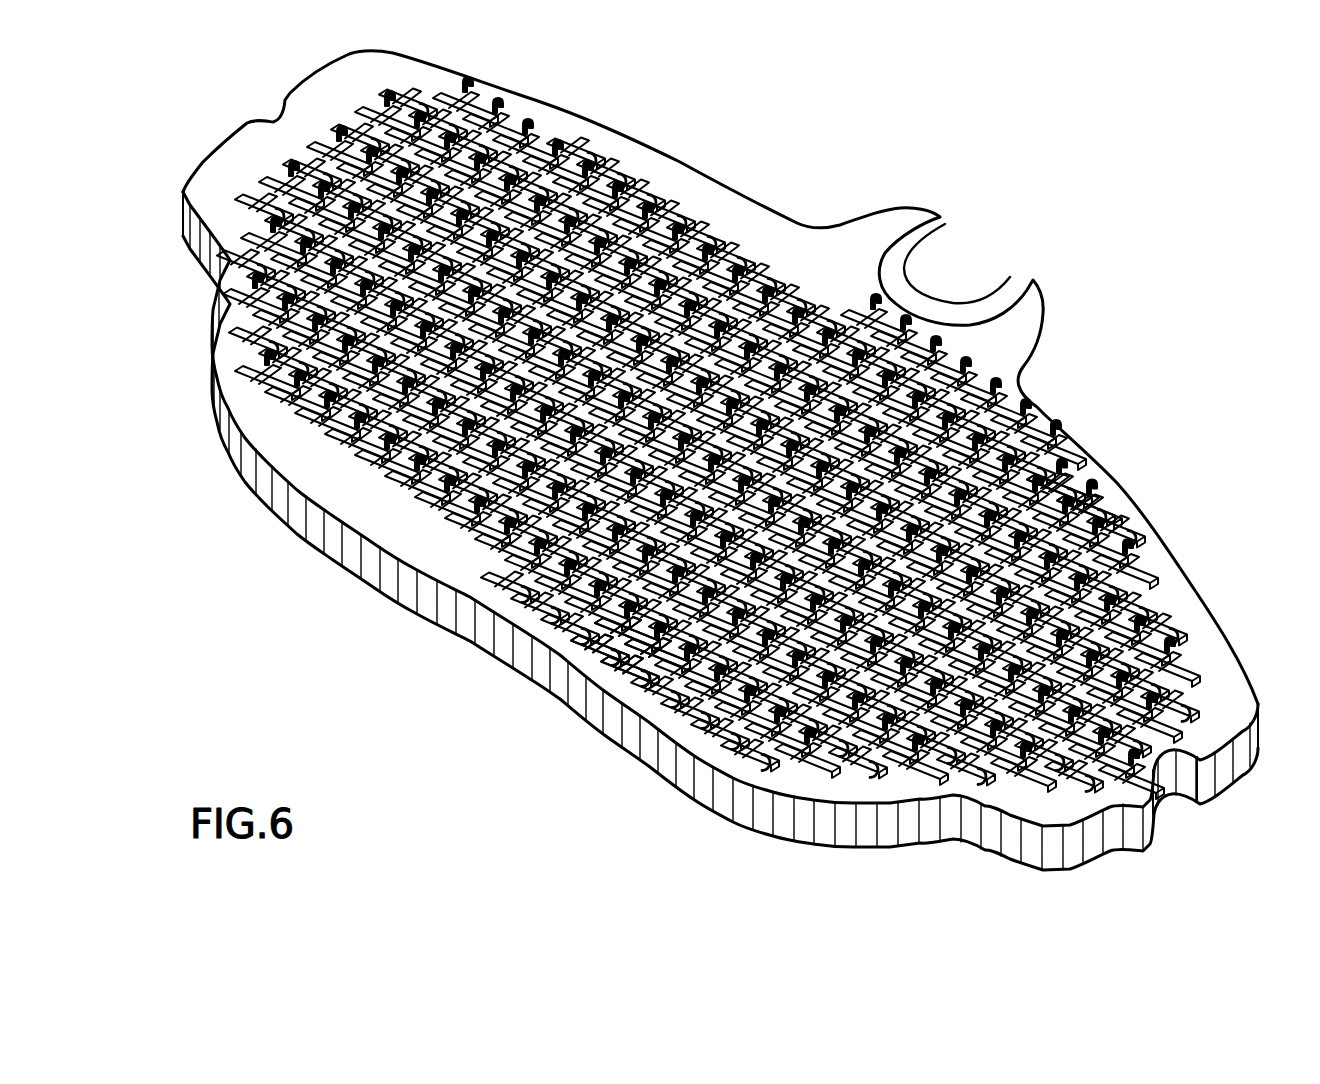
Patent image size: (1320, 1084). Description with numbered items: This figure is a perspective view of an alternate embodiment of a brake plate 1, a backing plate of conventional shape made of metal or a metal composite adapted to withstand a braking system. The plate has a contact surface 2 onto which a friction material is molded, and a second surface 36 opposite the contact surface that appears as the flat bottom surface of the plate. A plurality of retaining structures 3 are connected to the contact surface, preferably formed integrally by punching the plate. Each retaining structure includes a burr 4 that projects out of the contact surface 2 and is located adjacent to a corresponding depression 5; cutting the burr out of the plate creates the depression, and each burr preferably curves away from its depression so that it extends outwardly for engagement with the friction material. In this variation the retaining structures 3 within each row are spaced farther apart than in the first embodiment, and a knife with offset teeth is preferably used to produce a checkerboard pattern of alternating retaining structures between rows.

The brake plate 1 is at (1186, 469).
The contact surface 2 is at (1203, 620).
The retaining structure 3 is at (1090, 507).
The burr 4 is at (620, 640).
The depression 5 is at (663, 675).
The second surface 36 is at (867, 852).